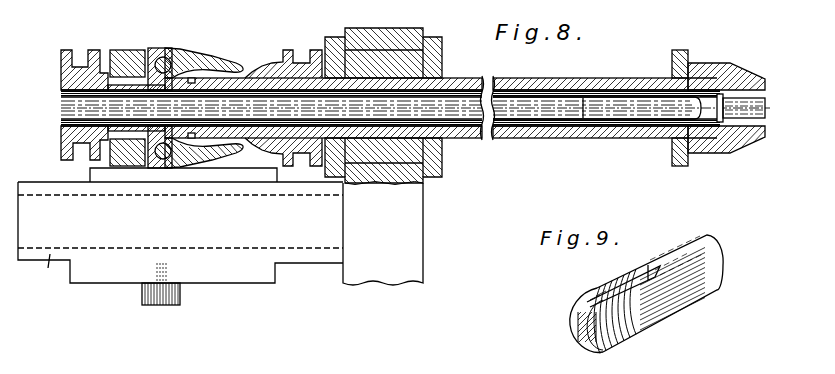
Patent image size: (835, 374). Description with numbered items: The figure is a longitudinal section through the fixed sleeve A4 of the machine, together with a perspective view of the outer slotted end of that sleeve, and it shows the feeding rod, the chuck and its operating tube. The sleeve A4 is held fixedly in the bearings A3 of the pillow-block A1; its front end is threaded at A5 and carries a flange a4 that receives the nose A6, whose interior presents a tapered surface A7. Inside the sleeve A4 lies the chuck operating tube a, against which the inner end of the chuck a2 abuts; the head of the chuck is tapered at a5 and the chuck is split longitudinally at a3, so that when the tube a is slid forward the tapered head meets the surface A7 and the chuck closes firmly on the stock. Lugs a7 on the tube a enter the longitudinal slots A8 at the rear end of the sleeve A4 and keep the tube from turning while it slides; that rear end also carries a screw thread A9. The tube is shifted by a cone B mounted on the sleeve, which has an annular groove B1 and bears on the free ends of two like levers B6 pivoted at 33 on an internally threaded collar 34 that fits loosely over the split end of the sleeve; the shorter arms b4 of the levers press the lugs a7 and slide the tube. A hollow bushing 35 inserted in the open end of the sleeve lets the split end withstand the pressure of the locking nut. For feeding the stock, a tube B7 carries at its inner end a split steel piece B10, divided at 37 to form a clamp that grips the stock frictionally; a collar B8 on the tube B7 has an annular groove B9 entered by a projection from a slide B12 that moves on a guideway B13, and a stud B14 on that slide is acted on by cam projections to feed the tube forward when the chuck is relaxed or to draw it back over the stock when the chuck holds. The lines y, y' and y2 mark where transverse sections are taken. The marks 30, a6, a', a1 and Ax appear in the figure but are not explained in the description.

In FIG. 8, the cone B is at (246, 146).
In FIG. 8, the pillow-block A1 is at (423, 183).
In FIG. 8, the stud B14 is at (143, 297).
In FIG. 8, the guideway B13 is at (45, 274).
In FIG. 8, the slide B12 is at (87, 173).
In FIG. 8, the annular groove B9 is at (79, 62).
In FIG. 8, the collar B8 is at (62, 134).
In FIG. 8, the hollow bushing 35 is at (60, 142).
In FIG. 8, the longitudinal slots A8 is at (143, 38).
In FIG. 9, the longitudinal slots A8 is at (628, 282).
In FIG. 8, the section line y is at (127, 86).
In FIG. 8, the nut face 30 is at (113, 57).
In FIG. 8, the section line y' is at (160, 90).
In FIG. 8, the pivot 33 is at (168, 57).
In FIG. 8, the lugs a7 is at (192, 70).
In FIG. 8, the chuck operating tube a is at (295, 101).
In FIG. 8, the annular groove B1 is at (306, 152).
In FIG. 8, the levers B6 is at (222, 152).
In FIG. 8, the shorter arms b4 is at (148, 154).
In FIG. 8, the collar 34 is at (138, 156).
In FIG. 8, the screw thread A9 is at (124, 152).
In FIG. 9, the screw thread A9 is at (616, 335).
In FIG. 8, the sleeve A4 is at (574, 150).
In FIG. 9, the sleeve A4 is at (680, 248).
In FIG. 8, the longitudinal split a3 is at (640, 122).
In FIG. 8, the bearings A3 is at (325, 44).
In FIG. 8, the sleeve extension a6 is at (487, 80).
In FIG. 8, the feeding tube B7 is at (455, 139).
In FIG. 8, the sleeve portion a' is at (590, 98).
In FIG. 8, the flange a4 is at (678, 50).
In FIG. 8, the shoulder a1 is at (671, 80).
In FIG. 8, the tapered surface A7 is at (756, 80).
In FIG. 8, the cap part Ax is at (726, 90).
In FIG. 8, the section line y2 is at (720, 188).
In FIG. 8, the chuck a2 is at (768, 117).
In FIG. 8, the tapered head a5 is at (760, 130).
In FIG. 8, the nose A6 is at (742, 148).
In FIG. 8, the front thread A5 is at (704, 152).
In FIG. 8, the split 37 is at (676, 152).
In FIG. 8, the stock engaging device B10 is at (688, 121).